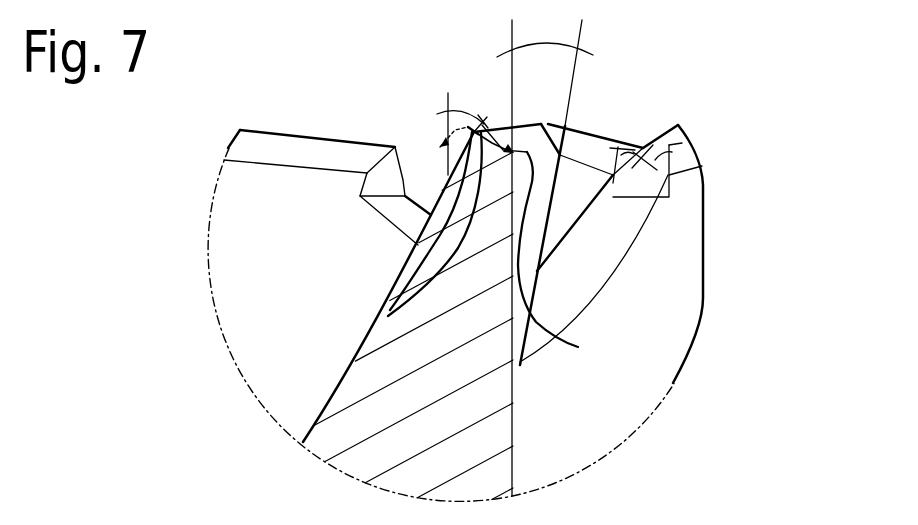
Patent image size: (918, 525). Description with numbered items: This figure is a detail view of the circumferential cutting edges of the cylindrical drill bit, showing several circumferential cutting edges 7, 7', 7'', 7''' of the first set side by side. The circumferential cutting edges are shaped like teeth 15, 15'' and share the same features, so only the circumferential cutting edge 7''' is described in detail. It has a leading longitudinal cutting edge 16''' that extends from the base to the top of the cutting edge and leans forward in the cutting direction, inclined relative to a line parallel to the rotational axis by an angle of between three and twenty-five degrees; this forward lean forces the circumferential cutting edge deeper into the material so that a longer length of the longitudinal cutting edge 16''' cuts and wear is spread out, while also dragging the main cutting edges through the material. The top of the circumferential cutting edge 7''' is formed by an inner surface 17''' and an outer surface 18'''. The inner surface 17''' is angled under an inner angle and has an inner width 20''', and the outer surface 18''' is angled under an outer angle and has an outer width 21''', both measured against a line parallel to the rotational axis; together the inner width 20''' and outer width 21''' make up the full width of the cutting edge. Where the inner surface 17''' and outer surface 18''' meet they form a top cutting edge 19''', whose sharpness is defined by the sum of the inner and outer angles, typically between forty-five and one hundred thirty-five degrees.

The circumferential cutting edge 7 is at (309, 125).
The teeth 15 is at (395, 167).
The inner surface 17''' is at (387, 287).
The outer width 21''' is at (410, 226).
The circumferential cutting edge 7''' is at (500, 86).
The inner width 20''' is at (449, 105).
The top cutting edge 19''' is at (525, 112).
The outer surface 18''' is at (577, 256).
The circumferential cutting edge 7' is at (581, 209).
The circumferential cutting edge 7'' is at (673, 225).
The tooth 15'' is at (685, 179).
The longitudinal cutting edge 16''' is at (644, 268).